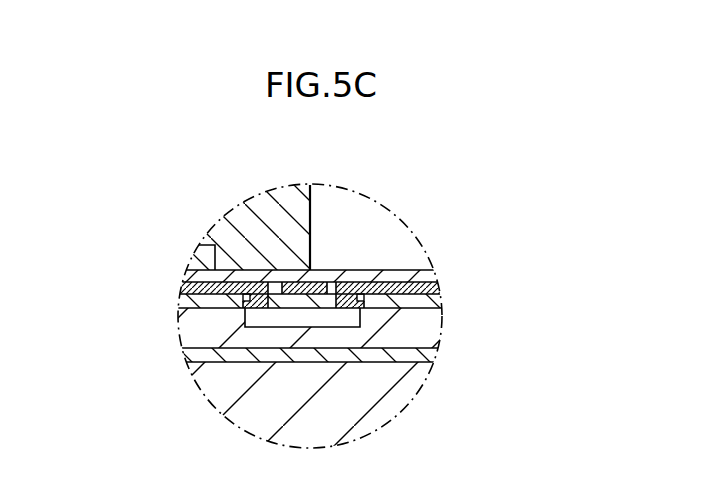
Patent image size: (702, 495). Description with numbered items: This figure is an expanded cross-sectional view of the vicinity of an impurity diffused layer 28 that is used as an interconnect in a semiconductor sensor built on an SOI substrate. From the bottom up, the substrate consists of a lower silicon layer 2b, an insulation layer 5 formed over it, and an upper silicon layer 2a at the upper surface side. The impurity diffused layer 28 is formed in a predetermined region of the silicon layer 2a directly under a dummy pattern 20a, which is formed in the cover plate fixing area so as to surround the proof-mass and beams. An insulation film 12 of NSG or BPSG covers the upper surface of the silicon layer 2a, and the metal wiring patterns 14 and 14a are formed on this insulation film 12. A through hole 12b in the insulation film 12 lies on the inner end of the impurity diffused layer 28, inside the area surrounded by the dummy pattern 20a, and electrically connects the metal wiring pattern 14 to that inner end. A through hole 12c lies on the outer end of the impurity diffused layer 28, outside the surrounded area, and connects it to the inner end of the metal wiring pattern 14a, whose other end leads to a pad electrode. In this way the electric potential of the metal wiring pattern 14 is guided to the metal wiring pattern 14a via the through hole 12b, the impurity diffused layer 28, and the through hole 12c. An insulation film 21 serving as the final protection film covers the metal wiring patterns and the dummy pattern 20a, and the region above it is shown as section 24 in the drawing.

The silicon layer 2a is at (319, 337).
The silicon layer 2b is at (413, 388).
The insulation layer 5 is at (430, 358).
The insulation film 12 is at (345, 232).
The through hole 12b is at (248, 298).
The through hole 12c is at (364, 296).
The metal wiring pattern 14 is at (295, 243).
The metal wiring pattern 14a is at (400, 277).
The dummy pattern 20a is at (318, 284).
The insulation film 21 is at (421, 276).
The filling layer 24 is at (264, 210).
The impurity diffused layer 28 is at (243, 322).